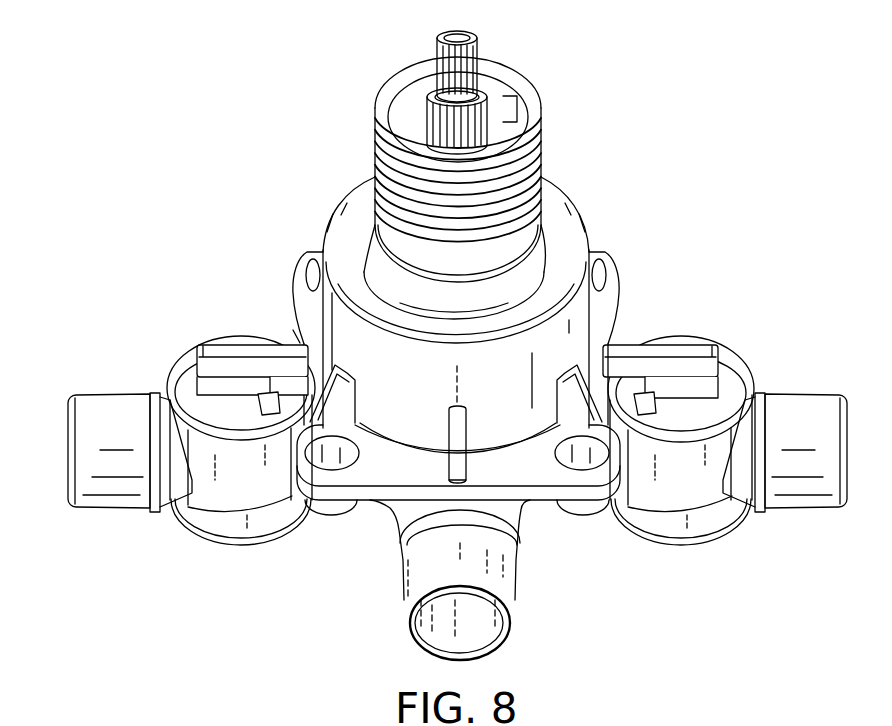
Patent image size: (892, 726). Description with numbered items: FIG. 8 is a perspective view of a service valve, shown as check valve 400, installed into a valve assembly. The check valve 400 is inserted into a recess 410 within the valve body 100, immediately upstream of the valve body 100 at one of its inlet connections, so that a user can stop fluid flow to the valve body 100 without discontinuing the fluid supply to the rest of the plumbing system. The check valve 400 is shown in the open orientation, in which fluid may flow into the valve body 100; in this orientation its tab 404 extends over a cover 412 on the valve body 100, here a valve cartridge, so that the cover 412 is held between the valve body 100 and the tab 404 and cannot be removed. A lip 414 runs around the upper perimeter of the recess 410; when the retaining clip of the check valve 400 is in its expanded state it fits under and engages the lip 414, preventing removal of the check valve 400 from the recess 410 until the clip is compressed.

The valve body 100 is at (493, 572).
The check valve 400 is at (718, 423).
The tab 404 is at (702, 377).
The recess 410 is at (698, 487).
The cover 412 is at (626, 338).
The lip 414 is at (742, 386).